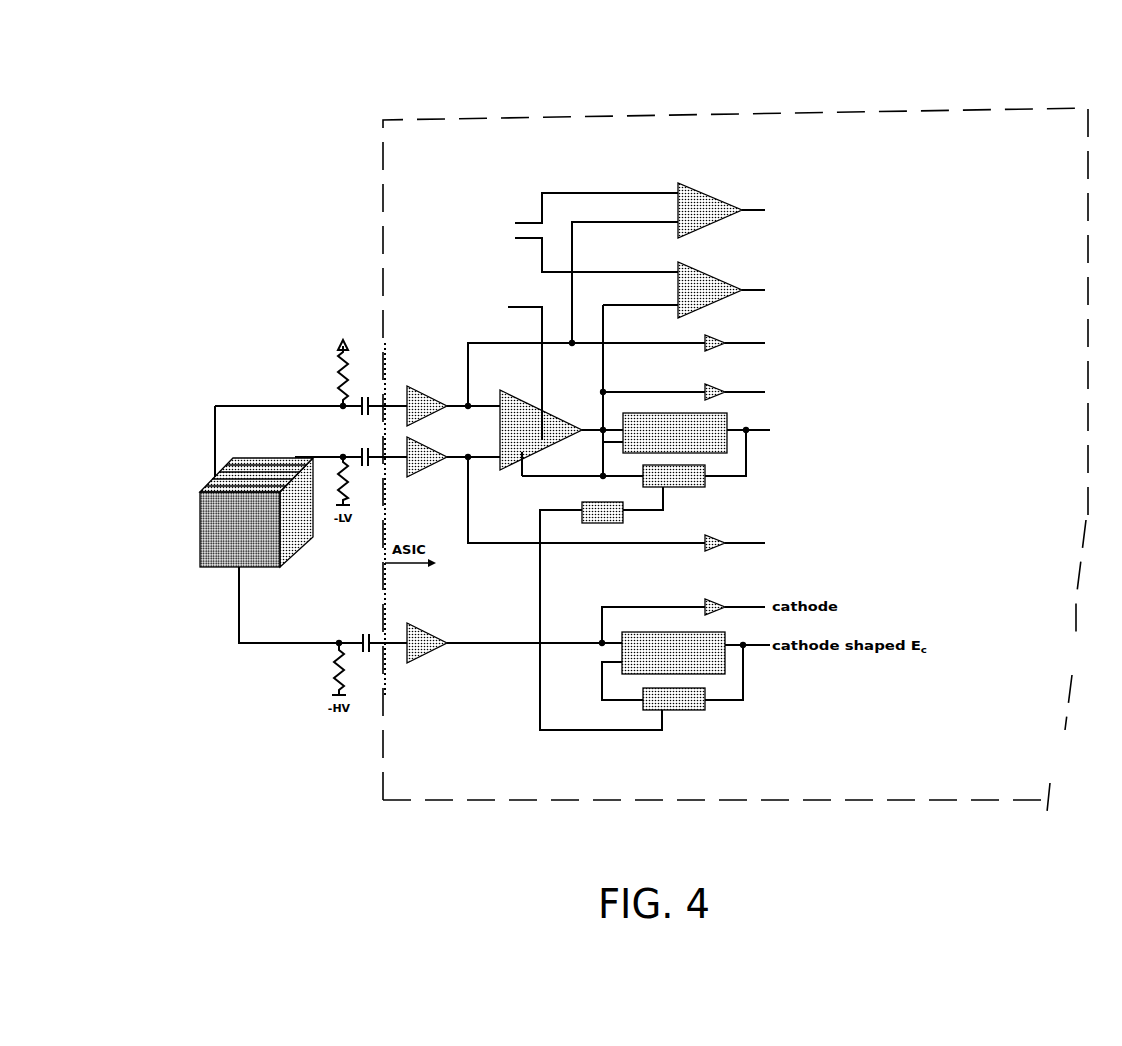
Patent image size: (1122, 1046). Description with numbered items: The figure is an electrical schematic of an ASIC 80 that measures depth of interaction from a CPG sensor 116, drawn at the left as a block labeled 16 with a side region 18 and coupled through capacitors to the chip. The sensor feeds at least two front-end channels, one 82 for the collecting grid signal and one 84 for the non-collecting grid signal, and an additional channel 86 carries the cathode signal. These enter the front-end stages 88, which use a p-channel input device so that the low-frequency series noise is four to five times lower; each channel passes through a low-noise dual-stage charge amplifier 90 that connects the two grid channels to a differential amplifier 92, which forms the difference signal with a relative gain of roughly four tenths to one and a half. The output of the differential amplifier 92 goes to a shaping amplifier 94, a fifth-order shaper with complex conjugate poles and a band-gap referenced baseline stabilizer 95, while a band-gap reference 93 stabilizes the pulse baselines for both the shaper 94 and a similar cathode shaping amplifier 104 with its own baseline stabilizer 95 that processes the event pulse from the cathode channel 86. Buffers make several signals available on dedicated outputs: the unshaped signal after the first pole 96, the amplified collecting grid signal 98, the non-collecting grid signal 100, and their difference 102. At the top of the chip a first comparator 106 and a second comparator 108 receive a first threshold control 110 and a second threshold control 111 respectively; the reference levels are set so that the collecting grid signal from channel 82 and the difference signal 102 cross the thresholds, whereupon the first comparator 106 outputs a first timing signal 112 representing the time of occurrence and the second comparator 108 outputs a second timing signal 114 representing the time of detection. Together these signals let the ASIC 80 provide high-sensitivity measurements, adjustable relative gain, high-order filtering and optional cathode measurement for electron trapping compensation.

The CPG sensor 16 is at (220, 553).
The sensor electrode 18 is at (305, 535).
The CPG sensor 116 is at (227, 533).
The ASIC 80 is at (532, 100).
The collecting grid channel 82 is at (330, 320).
The non-collecting grid channel 84 is at (407, 455).
The cathode channel 86 is at (406, 668).
The front-end stages 88 is at (413, 690).
The charge amplifier 90 is at (432, 394).
The differential amplifier 92 is at (518, 400).
The band-gap reference 93 is at (621, 522).
The shaping amplifier 94 is at (745, 417).
The baseline stabilizer 95 is at (700, 489).
The unshaped signal after first pole output 96 is at (958, 432).
The amplified collecting grid signal 98 is at (873, 345).
The non-collecting grid signal 100 is at (907, 540).
The difference signal 102 is at (865, 392).
The cathode shaping amplifier 104 is at (727, 640).
The first comparator 106 is at (728, 185).
The second comparator 108 is at (730, 264).
The first threshold control 110 is at (525, 222).
The second threshold control 111 is at (527, 223).
The first timing signal 112 is at (912, 197).
The second timing signal 114 is at (920, 272).